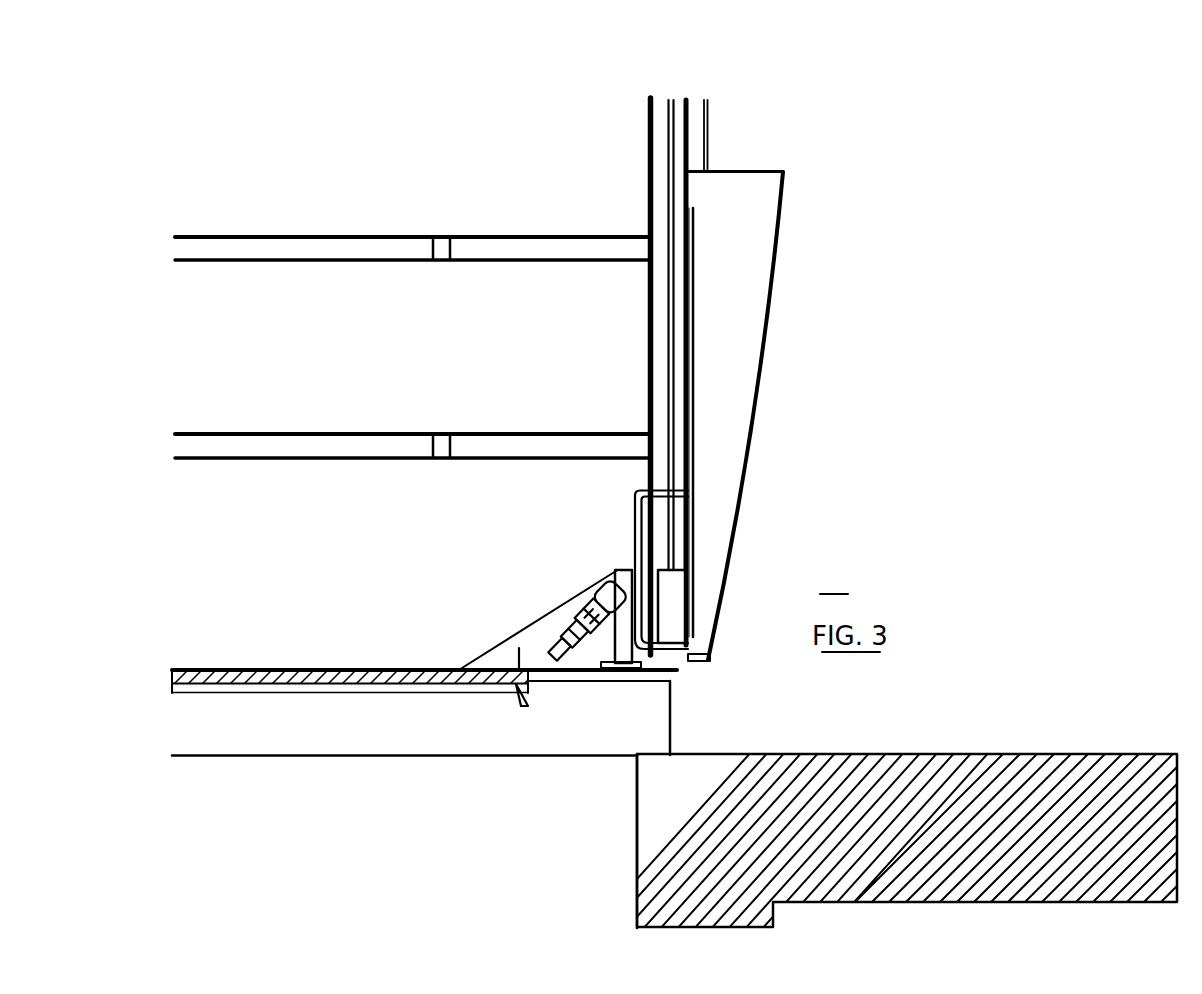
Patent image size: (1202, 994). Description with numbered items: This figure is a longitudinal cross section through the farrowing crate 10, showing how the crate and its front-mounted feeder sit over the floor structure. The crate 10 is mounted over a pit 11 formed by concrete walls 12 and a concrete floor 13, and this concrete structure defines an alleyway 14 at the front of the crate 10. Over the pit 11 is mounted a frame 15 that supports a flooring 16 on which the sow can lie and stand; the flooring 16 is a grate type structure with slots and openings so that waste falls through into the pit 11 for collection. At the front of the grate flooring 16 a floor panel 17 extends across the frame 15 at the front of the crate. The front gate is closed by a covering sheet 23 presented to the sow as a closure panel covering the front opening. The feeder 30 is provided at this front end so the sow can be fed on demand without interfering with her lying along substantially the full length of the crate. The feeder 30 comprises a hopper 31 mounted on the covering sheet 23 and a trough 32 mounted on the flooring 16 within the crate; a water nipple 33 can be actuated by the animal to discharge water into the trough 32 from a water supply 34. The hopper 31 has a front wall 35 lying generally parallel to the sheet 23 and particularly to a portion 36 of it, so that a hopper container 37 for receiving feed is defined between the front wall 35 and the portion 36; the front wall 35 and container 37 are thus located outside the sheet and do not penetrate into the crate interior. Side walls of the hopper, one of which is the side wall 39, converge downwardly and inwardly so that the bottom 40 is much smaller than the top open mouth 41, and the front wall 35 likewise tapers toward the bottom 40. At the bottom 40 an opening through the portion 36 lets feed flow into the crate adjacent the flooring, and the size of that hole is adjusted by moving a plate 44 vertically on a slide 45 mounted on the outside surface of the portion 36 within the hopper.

The farrowing crate 10 is at (768, 497).
The pit 11 is at (578, 855).
The concrete walls 12 is at (637, 842).
The concrete floor 13 is at (888, 750).
The alleyway 14 is at (954, 662).
The frame 15 is at (360, 747).
The flooring 16 is at (275, 669).
The floor panel 17 is at (577, 688).
The covering sheet 23 is at (690, 138).
The feeder 30 is at (790, 375).
The hopper 31 is at (736, 428).
The trough 32 is at (530, 600).
The water nipple 33 is at (568, 618).
The water supply 34 is at (600, 578).
The front wall 35 is at (771, 291).
The portion of panel 36 is at (694, 235).
The hopper container 37 is at (734, 389).
The side wall 39 is at (716, 552).
The bottom 40 is at (700, 663).
The top open mouth 41 is at (776, 172).
The plate 44 is at (689, 272).
The slide 45 is at (694, 596).